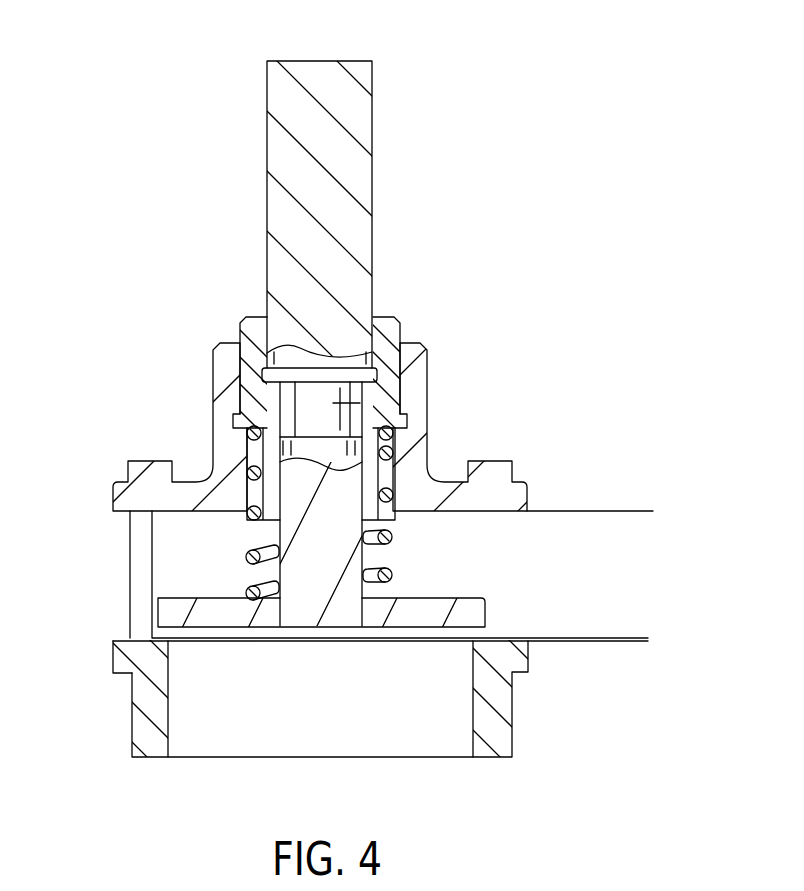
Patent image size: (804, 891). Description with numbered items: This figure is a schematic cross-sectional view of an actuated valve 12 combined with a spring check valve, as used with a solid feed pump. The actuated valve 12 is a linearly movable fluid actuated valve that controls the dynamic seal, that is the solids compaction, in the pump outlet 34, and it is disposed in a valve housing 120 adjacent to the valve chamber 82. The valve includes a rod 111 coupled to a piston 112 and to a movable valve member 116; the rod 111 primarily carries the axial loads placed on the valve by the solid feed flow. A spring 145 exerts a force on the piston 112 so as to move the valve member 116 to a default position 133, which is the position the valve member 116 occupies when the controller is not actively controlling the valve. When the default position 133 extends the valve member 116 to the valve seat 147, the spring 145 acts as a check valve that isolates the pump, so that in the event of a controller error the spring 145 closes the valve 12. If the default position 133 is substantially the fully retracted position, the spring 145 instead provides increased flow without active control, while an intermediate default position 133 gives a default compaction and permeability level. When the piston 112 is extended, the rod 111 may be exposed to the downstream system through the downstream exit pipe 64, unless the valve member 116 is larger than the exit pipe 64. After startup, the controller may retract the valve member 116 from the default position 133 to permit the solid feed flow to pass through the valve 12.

The actuated valve 12 is at (498, 252).
The outlet 34 is at (345, 736).
The downstream exit pipe 64 is at (592, 511).
The valve chamber 82 is at (170, 555).
The rod 111 is at (333, 403).
The piston 112 is at (311, 73).
The valve member 116 is at (292, 628).
The valve housing 120 is at (430, 447).
The default position 133 is at (422, 608).
The spring 145 is at (393, 537).
The valve seat 147 is at (117, 660).